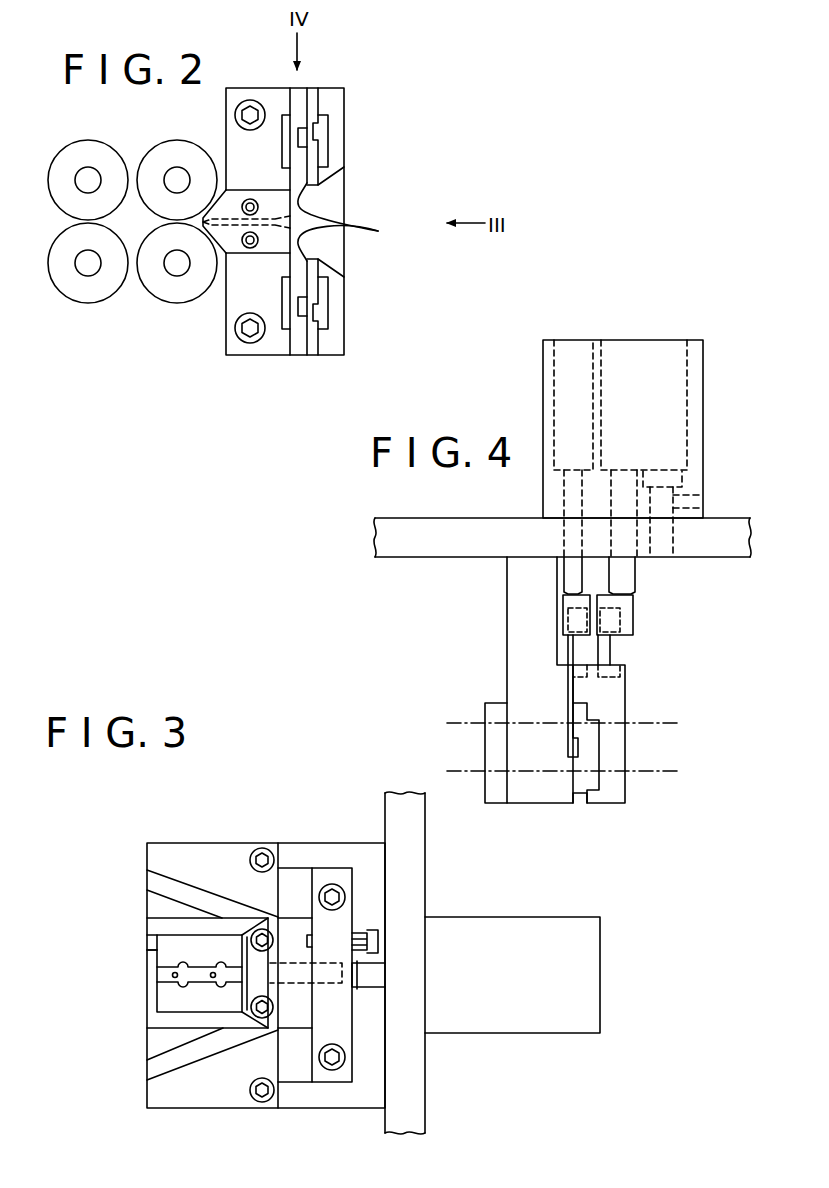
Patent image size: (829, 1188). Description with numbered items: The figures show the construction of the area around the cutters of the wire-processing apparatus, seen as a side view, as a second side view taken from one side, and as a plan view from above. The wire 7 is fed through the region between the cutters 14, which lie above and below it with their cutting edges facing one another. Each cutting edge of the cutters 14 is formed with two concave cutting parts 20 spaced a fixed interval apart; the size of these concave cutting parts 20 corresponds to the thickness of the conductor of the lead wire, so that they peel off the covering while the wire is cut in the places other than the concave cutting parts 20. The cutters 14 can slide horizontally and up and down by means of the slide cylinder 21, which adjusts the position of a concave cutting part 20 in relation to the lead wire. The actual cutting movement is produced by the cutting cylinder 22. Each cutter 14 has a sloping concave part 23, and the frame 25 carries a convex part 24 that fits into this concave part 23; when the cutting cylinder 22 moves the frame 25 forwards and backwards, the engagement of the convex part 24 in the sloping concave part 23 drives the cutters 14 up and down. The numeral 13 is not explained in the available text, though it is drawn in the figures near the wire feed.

In FIG. 4, the wire 7 is at (447, 723).
In FIG. 2, the feed rollers 13 is at (167, 298).
In FIG. 2, the cutter 14 is at (378, 231).
In FIG. 4, the cutter 14 is at (577, 791).
In FIG. 3, the cutter 14 is at (146, 952).
In FIG. 3, the concave cutting part 20 is at (223, 986).
In FIG. 4, the slide cylinder 21 is at (583, 352).
In FIG. 4, the cutting cylinder 22 is at (658, 352).
In FIG. 3, the cutting cylinder 22 is at (500, 1020).
In FIG. 2, the sloping concave part 23 is at (292, 305).
In FIG. 3, the sloping concave part 23 is at (178, 887).
In FIG. 2, the convex part 24 is at (305, 305).
In FIG. 3, the convex part 24 is at (212, 1054).
In FIG. 2, the frame 25 is at (312, 337).
In FIG. 4, the frame 25 is at (618, 690).
In FIG. 3, the frame 25 is at (188, 1078).